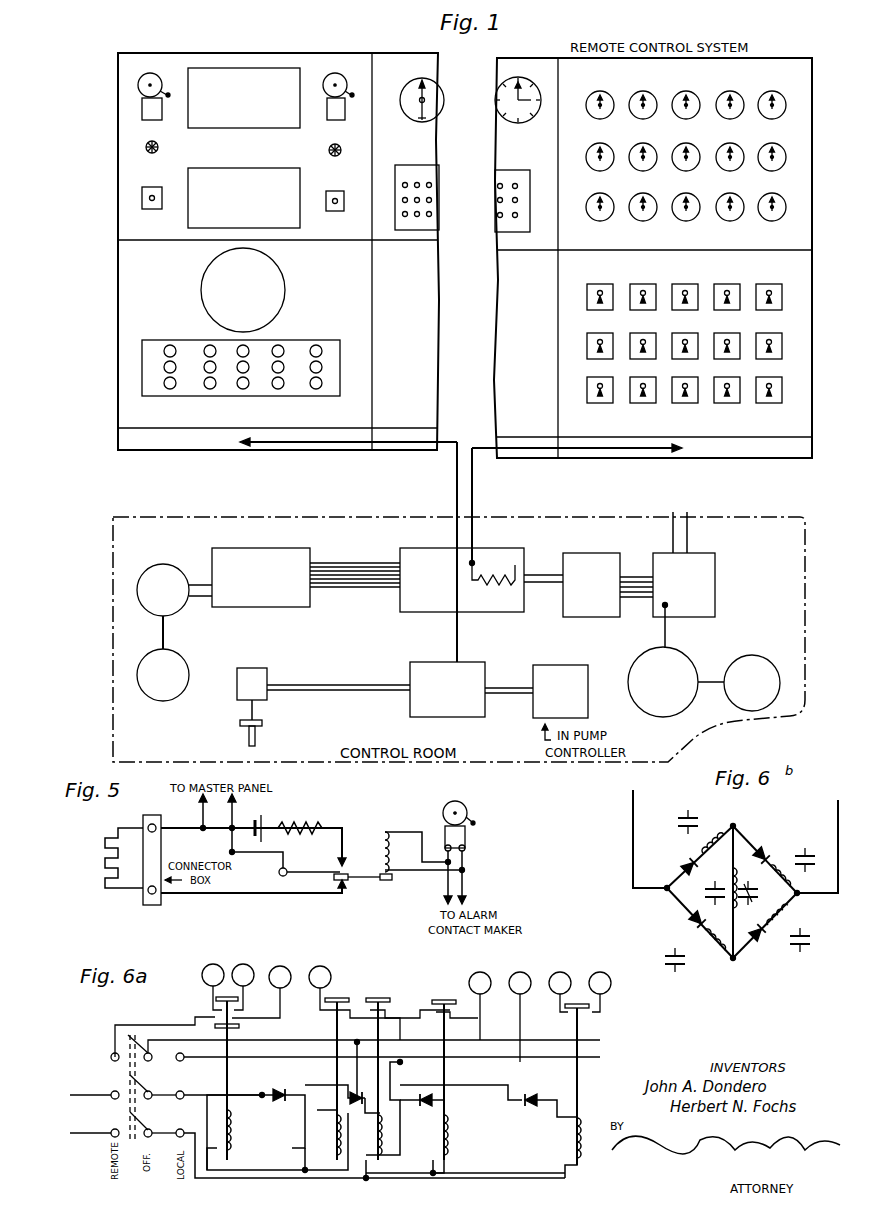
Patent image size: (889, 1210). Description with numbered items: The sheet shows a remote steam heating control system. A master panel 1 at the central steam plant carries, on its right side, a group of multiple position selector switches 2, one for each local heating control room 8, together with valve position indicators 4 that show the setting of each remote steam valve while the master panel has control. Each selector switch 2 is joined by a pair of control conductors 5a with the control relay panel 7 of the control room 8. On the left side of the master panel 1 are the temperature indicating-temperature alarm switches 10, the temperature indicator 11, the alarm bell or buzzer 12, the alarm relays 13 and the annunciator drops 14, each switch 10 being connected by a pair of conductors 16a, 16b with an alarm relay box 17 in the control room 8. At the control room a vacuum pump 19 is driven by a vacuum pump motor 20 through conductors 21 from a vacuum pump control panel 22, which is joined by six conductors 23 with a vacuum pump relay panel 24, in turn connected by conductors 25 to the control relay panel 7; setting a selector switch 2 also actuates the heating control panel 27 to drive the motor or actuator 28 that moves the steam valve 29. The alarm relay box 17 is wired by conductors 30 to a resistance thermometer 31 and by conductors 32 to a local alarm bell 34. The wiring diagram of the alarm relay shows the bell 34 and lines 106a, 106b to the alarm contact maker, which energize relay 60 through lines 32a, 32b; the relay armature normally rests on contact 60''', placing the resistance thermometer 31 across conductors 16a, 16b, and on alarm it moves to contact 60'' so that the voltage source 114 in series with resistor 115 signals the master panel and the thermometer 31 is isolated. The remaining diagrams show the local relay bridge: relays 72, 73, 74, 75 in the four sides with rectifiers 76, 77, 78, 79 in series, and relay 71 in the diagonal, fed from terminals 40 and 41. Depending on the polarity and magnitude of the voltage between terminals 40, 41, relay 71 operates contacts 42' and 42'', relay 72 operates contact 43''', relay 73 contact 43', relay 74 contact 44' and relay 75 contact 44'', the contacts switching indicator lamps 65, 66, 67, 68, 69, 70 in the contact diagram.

In FIG. 1, the master panel 1 is at (810, 153).
In FIG. 1, the multiple position selector switch 2 is at (782, 308).
In FIG. 1, the valve position indicator 4 is at (784, 110).
In FIG. 1, the control conductor 5a is at (475, 490).
In FIG. 1, the control relay panel 7 is at (492, 550).
In FIG. 1, the local heating control room 8 is at (808, 570).
In FIG. 1, the temperature indicating-temperature alarm switch 10 is at (142, 364).
In FIG. 1, the temperature indicator 11 is at (202, 277).
In FIG. 1, the alarm relays / alarm bell or buzzer 12 is at (140, 82).
In FIG. 1, the alarm relays 13 is at (188, 173).
In FIG. 1, the annunciator drop 14 is at (280, 68).
In FIG. 1, the conductor 16a is at (455, 490).
In FIG. 5, the conductor 16a is at (200, 818).
In FIG. 5, the conductor 16b is at (236, 812).
In FIG. 1, the alarm relay box 17 is at (480, 662).
In FIG. 1, the vacuum pump 19 is at (769, 656).
In FIG. 1, the vacuum pump electric motor 20 is at (690, 658).
In FIG. 1, the conductors 21 is at (666, 636).
In FIG. 1, the vacuum pump control panel 22 is at (717, 570).
In FIG. 1, the conductors 23 is at (638, 600).
In FIG. 1, the vacuum pump relay panel 24 is at (612, 553).
In FIG. 1, the conductors 25 is at (536, 575).
In FIG. 1, the heating control panel 27 is at (272, 548).
In FIG. 1, the motor or actuator 28 is at (143, 577).
In FIG. 1, the steam valve 29 is at (145, 658).
In FIG. 1, the conductors 30 is at (360, 684).
In FIG. 1, the resistance thermometer 31 is at (260, 732).
In FIG. 5, the resistance thermometer 31 is at (127, 855).
In FIG. 1, the conductors 32 is at (500, 698).
In FIG. 5, the line 32a is at (413, 818).
In FIG. 5, the line 32b is at (398, 871).
In FIG. 1, the alarm bell 34 is at (578, 665).
In FIG. 5, the alarm bell 34 is at (471, 843).
In FIG. 6B, the terminal 40 is at (630, 812).
In FIG. 6A, the terminal 40 is at (186, 1088).
In FIG. 6B, the terminal 41 is at (836, 814).
In FIG. 6A, the terminal 41 is at (182, 1130).
In FIG. 6B, the contact 42' is at (709, 887).
In FIG. 6A, the contact 42' is at (228, 978).
In FIG. 6B, the contact 42'' is at (761, 894).
In FIG. 6A, the contact 42'' is at (248, 1078).
In FIG. 6B, the contact 43' is at (808, 851).
In FIG. 6A, the contact 43' is at (408, 1055).
In FIG. 6B, the contact 43''' is at (682, 813).
In FIG. 6A, the contact 43''' is at (362, 1055).
In FIG. 6B, the contact 44' is at (801, 946).
In FIG. 6A, the contact 44' is at (455, 1055).
In FIG. 6B, the contact 44'' is at (678, 967).
In FIG. 6A, the contact 44'' is at (563, 1084).
In FIG. 5, the relay 60 is at (423, 852).
In FIG. 5, the contact 60'' is at (355, 851).
In FIG. 5, the contact 60''' is at (363, 886).
In FIG. 6A, the indicator lamp 65 is at (283, 966).
In FIG. 6A, the indicator lamp 66 is at (321, 966).
In FIG. 6A, the indicator lamp 67 is at (528, 966).
In FIG. 6A, the indicator lamp 68 is at (486, 966).
In FIG. 6A, the indicator lamp 69 is at (568, 966).
In FIG. 6A, the indicator lamp 70 is at (606, 966).
In FIG. 6B, the relay 71 is at (735, 852).
In FIG. 6A, the relay 71 is at (232, 1132).
In FIG. 6B, the relay 72 is at (692, 921).
In FIG. 6A, the relay 72 is at (330, 1125).
In FIG. 6B, the relay 73 is at (778, 860).
In FIG. 6A, the relay 73 is at (388, 1118).
In FIG. 6B, the relay 74 is at (798, 904).
In FIG. 6A, the relay 74 is at (450, 1130).
In FIG. 6B, the relay 75 is at (760, 944).
In FIG. 6A, the relay 75 is at (570, 1130).
In FIG. 6B, the rectifier 76 is at (690, 864).
In FIG. 6A, the rectifier 76 is at (280, 1104).
In FIG. 6B, the rectifier 77 is at (762, 848).
In FIG. 6A, the rectifier 77 is at (357, 1090).
In FIG. 6B, the rectifier 78 is at (756, 927).
In FIG. 6A, the rectifier 78 is at (420, 1108).
In FIG. 6A, the rectifier 79 is at (528, 1098).
In FIG. 5, the line 106a is at (445, 898).
In FIG. 5, the line 106b is at (466, 880).
In FIG. 5, the voltage source 114 is at (265, 823).
In FIG. 5, the resistor 115 is at (300, 845).